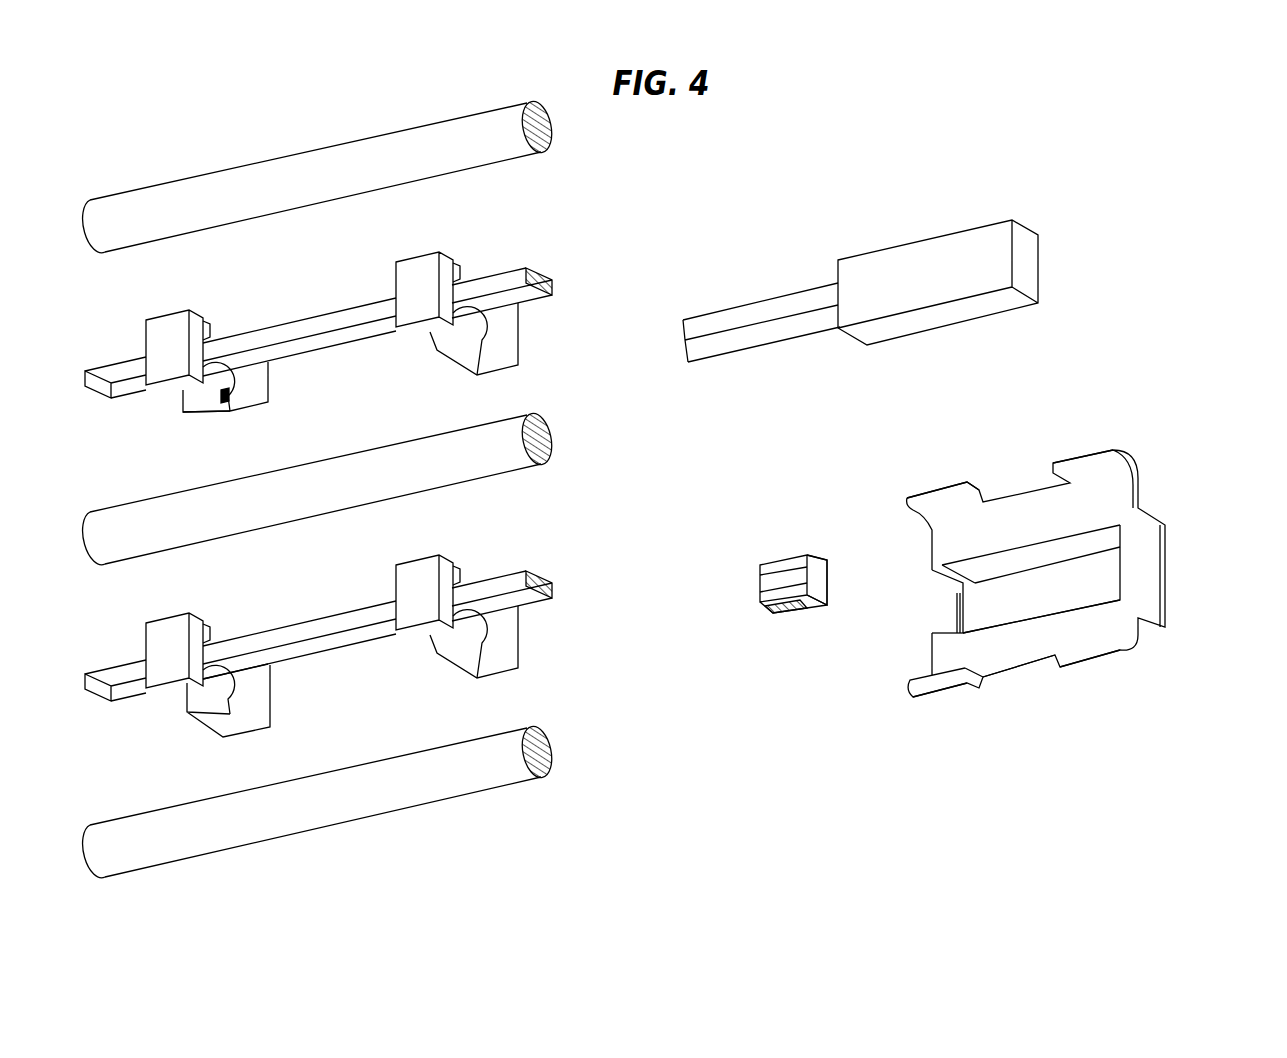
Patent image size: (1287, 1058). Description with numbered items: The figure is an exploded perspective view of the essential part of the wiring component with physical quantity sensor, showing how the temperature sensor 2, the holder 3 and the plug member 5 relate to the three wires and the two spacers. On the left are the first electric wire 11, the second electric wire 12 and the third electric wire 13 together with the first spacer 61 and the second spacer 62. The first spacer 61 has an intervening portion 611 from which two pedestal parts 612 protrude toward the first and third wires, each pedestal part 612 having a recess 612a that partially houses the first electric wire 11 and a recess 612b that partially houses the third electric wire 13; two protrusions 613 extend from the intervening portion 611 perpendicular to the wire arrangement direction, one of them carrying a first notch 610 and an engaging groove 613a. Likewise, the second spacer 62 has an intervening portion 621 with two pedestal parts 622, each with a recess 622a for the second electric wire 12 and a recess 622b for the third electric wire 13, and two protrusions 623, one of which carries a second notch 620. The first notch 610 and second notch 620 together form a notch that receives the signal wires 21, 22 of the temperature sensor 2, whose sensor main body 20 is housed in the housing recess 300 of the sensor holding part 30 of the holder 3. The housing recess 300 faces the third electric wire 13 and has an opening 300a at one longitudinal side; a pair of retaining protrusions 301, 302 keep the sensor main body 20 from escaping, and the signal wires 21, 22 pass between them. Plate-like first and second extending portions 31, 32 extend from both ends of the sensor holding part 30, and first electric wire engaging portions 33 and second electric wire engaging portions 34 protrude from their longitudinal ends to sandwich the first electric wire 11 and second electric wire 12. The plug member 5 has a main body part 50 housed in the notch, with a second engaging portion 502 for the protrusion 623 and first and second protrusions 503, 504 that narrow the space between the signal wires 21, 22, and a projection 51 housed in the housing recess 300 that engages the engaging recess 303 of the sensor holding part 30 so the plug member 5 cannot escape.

The first electric wire 11 is at (122, 194).
The second electric wire 12 is at (320, 488).
The third electric wire 13 is at (320, 801).
The first spacer 61 is at (572, 278).
The first notch 610 is at (234, 419).
The intervening portion 611 is at (308, 315).
The pedestal part 612 is at (155, 322).
The recess 612a is at (206, 331).
The recess 612b is at (182, 398).
The protrusion 613 is at (272, 377).
The engaging groove 613a is at (242, 394).
The second spacer 62 is at (347, 635).
The second notch 620 is at (278, 683).
The intervening portion 621 is at (318, 634).
The pedestal part 622 is at (276, 608).
The recess 622a is at (307, 674).
The recess 622b is at (360, 588).
The protrusion 623 is at (380, 674).
The temperature sensor 2 is at (1042, 194).
The sensor main body 20 is at (925, 248).
The signal wire 21 is at (703, 320).
The signal wire 22 is at (708, 352).
The holder 3 is at (1160, 464).
The sensor holding part 30 is at (1168, 548).
The first extending portion 31 is at (1033, 528).
The second extending portion 32 is at (1030, 640).
The first electric wire engaging portion 33 is at (928, 488).
The second electric wire engaging portion 34 is at (937, 690).
The housing recess 300 is at (1060, 592).
The opening 300a is at (950, 610).
The retaining protrusion 301 is at (930, 572).
The retaining protrusion 302 is at (935, 636).
The engaging recess 303 is at (968, 616).
The plug member 5 is at (770, 535).
The main body part 50 is at (808, 620).
The projection 51 is at (820, 562).
The second engaging portion 502 is at (778, 614).
The first protrusion 503 is at (758, 572).
The second protrusion 504 is at (758, 600).